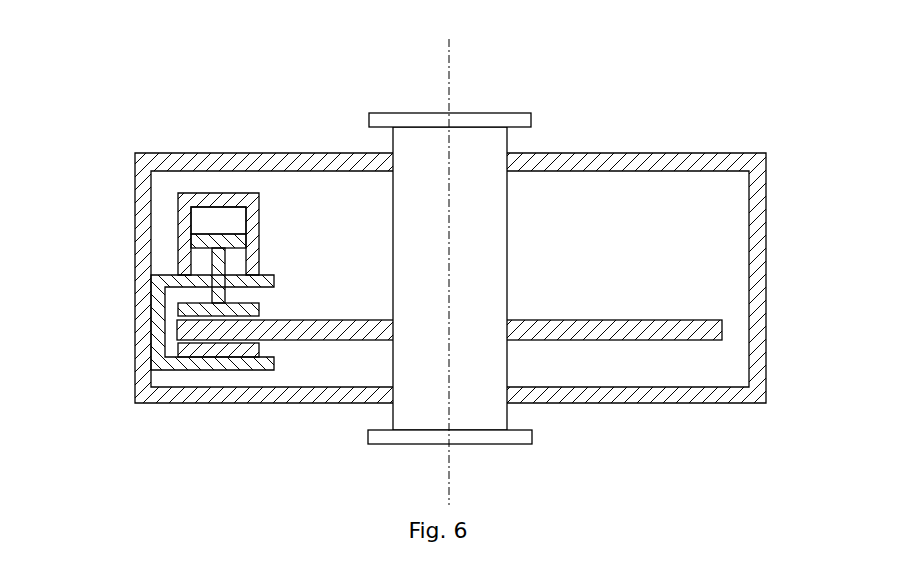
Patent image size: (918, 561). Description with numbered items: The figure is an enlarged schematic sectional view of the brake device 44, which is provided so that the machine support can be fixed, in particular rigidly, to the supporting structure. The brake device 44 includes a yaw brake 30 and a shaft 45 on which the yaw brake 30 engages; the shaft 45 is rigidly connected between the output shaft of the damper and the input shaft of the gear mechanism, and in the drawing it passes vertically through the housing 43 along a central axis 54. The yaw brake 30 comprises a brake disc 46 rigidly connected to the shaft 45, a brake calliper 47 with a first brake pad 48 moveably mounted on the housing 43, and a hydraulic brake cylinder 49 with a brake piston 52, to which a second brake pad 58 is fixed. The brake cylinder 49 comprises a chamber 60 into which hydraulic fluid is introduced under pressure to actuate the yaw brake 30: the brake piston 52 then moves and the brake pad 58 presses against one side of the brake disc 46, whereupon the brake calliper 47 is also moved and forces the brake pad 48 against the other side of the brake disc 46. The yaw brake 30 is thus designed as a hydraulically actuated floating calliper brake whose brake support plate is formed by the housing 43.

The yaw brake 30 is at (174, 276).
The housing 43 is at (413, 213).
The brake device 44 is at (437, 264).
The shaft 45 is at (498, 143).
The brake disc 46 is at (682, 325).
The brake calliper 47 is at (157, 347).
The first brake pad 48 is at (227, 349).
The hydraulic brake cylinder 49 is at (185, 200).
The brake piston 52 is at (203, 240).
The central axis 54 is at (449, 67).
The second brake pad 58 is at (195, 307).
The chamber 60 is at (221, 217).